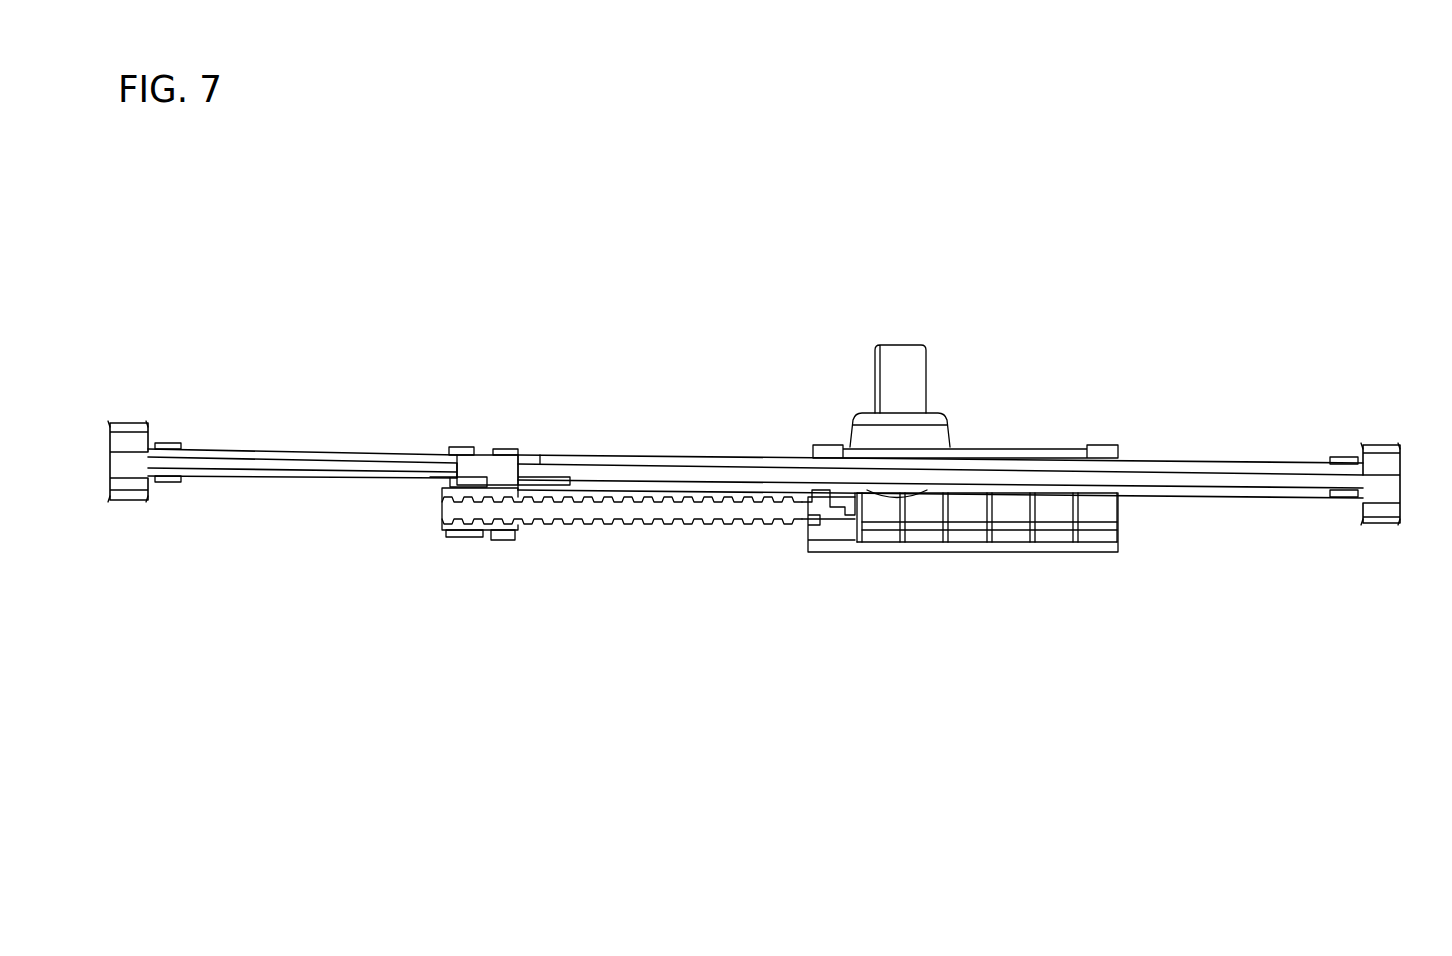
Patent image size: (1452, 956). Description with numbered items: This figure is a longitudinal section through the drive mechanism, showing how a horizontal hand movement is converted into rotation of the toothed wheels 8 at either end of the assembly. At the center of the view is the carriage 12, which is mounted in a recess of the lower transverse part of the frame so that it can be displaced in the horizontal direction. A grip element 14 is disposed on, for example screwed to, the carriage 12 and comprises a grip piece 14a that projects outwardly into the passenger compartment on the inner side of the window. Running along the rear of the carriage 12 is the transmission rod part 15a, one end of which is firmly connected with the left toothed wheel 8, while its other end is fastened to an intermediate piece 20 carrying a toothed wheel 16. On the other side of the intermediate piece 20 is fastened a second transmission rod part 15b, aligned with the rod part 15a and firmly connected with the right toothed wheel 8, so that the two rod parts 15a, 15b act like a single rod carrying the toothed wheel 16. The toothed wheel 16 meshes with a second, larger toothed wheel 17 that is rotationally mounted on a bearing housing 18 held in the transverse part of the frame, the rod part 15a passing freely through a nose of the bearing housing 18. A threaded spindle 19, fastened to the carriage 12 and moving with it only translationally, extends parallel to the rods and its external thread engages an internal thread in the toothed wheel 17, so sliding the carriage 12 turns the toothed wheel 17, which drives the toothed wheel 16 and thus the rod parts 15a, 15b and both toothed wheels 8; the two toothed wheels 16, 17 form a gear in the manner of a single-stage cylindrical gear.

The toothed wheel 8 is at (1373, 445).
The carriage 12 is at (992, 568).
The grip element 14 is at (928, 437).
The grip piece 14a is at (920, 358).
The transmission rod part 15a is at (1203, 465).
The second transmission rod part 15b is at (283, 453).
The toothed wheel 16 is at (502, 448).
The second toothed wheel 17 is at (500, 532).
The bearing housing 18 is at (450, 532).
The threaded spindle 19 is at (715, 517).
The intermediate piece 20 is at (543, 458).